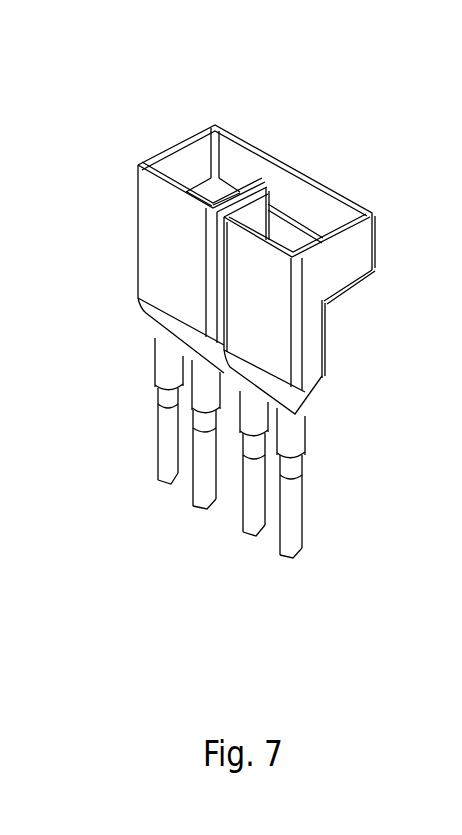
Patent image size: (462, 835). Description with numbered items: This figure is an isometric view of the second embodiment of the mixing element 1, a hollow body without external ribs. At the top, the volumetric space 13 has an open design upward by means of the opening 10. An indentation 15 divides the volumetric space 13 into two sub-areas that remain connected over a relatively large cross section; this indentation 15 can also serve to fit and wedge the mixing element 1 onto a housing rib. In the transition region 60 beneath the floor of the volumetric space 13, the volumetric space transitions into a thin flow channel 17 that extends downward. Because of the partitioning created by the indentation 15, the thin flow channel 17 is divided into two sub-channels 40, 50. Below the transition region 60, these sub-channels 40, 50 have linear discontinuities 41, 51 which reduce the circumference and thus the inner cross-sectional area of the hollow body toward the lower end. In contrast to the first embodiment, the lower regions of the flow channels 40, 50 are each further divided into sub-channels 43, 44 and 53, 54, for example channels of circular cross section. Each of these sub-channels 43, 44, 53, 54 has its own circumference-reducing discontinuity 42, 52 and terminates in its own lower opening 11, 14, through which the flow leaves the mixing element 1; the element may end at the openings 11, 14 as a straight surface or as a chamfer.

The mixing element 1 is at (117, 190).
The opening 10 is at (188, 160).
The lower opening 11 is at (172, 484).
The volumetric space 13 is at (363, 233).
The lower opening 14 is at (256, 536).
The indentation 15 is at (252, 188).
The thin flow channel 17 is at (323, 336).
The sub-channel 40 is at (138, 362).
The linear discontinuity 41 is at (152, 323).
The linear discontinuity 42 is at (160, 398).
The sub-channel 43 is at (203, 463).
The sub-channel 44 is at (162, 433).
The sub-channel 50 is at (328, 435).
The linear discontinuity 51 is at (320, 383).
The linear discontinuity 52 is at (300, 471).
The sub-channel 53 is at (298, 513).
The sub-channel 54 is at (255, 508).
The transition region 60 is at (340, 295).